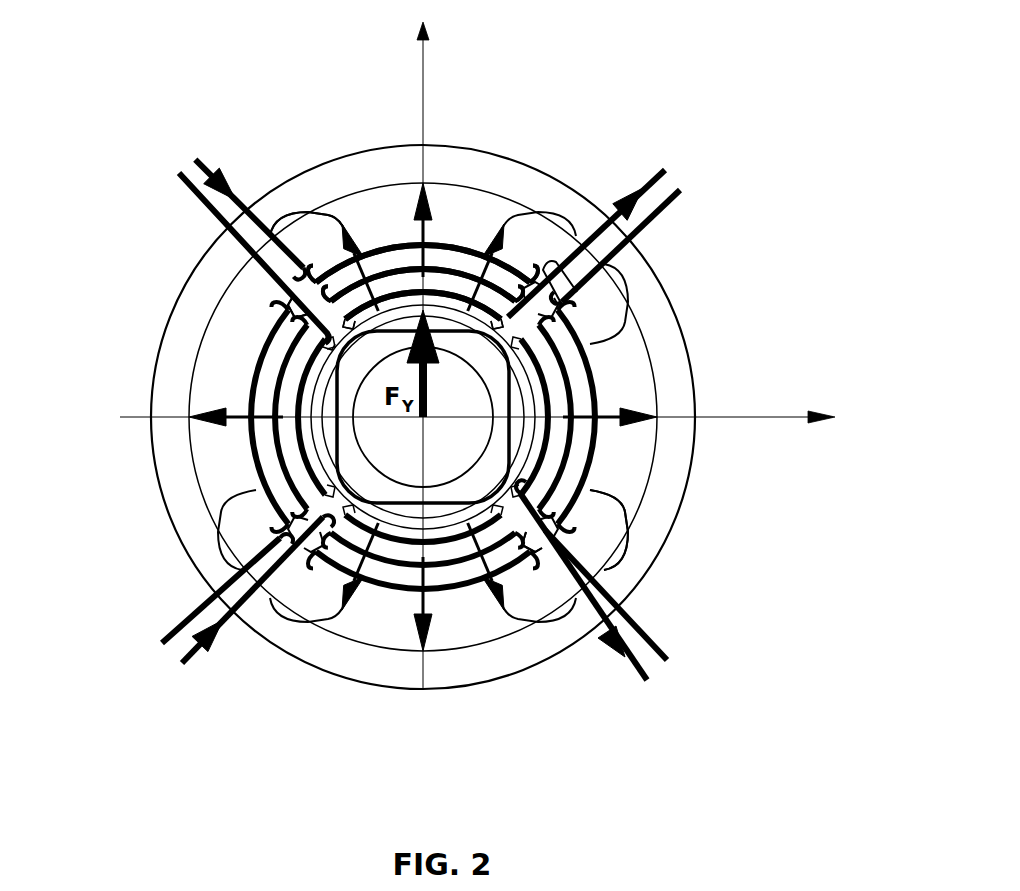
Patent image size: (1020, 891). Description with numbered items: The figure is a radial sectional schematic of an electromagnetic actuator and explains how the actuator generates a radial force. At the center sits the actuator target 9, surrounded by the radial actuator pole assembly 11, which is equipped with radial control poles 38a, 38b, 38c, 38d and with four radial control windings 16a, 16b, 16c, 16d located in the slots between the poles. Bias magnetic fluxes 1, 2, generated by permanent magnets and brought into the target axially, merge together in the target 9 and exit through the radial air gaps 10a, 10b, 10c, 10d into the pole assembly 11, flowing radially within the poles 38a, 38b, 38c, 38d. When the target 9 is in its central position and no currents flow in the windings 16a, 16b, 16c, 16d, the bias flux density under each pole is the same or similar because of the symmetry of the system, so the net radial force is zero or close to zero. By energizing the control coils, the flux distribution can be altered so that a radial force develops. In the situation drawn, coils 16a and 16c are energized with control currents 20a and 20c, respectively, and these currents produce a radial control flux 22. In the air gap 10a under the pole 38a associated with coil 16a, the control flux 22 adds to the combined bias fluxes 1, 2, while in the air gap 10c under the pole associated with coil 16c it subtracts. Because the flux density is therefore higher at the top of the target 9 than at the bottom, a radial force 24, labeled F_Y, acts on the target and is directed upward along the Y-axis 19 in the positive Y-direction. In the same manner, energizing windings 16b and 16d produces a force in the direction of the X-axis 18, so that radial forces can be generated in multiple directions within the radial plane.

The bias magnetic flux 1 is at (257, 229).
The bias magnetic flux 2 is at (283, 240).
The actuator target 9 is at (590, 480).
The radial air gap 10a is at (658, 168).
The radial air gap 10b is at (648, 635).
The radial air gap 10c is at (440, 560).
The radial air gap 10d is at (265, 470).
The radial actuator pole assembly 11 is at (200, 553).
The radial control winding 16a is at (443, 257).
The radial control winding 16b is at (590, 370).
The radial control winding 16c is at (490, 585).
The radial control winding 16d is at (245, 385).
The X-axis 18 is at (745, 420).
The Y-axis 19 is at (422, 231).
The control current 20a is at (212, 178).
The control current 20c is at (222, 653).
The radial control flux 22 is at (620, 290).
The radial force F_Y 24 is at (690, 405).
The radial pole 38a is at (445, 300).
The radial pole 38b is at (580, 330).
The radial pole 38c is at (440, 525).
The radial pole 38d is at (280, 300).